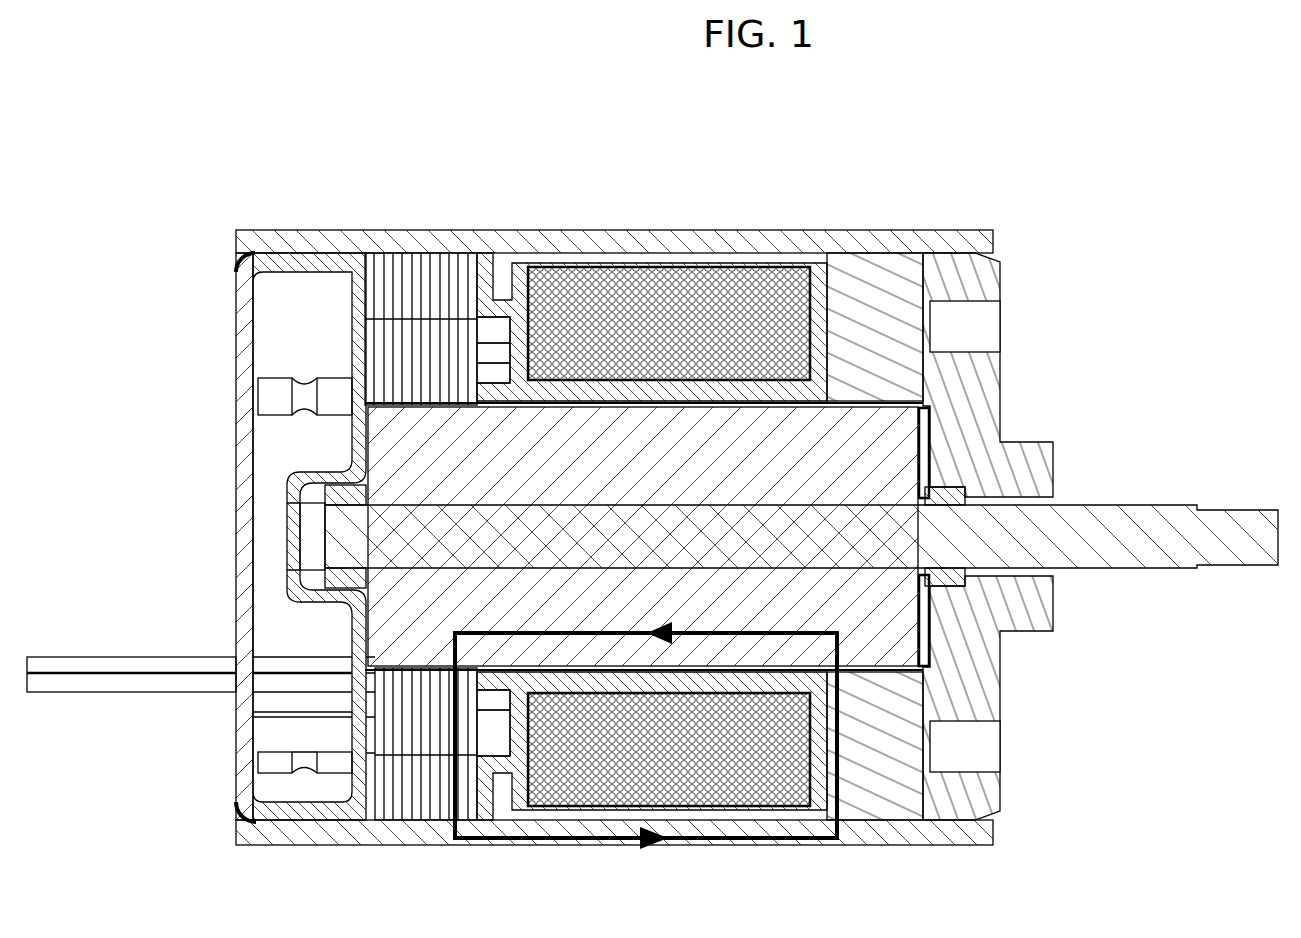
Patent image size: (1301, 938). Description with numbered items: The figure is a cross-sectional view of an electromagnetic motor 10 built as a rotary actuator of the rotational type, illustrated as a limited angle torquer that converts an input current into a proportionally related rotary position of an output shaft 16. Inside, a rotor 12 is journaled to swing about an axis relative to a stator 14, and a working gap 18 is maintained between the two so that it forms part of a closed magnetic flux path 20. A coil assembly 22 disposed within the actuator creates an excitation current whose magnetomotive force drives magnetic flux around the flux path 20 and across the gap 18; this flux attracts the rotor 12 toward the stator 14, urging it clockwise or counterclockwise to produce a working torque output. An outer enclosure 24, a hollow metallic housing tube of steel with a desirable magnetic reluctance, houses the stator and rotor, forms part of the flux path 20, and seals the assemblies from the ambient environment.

The electromagnetic motor 10 is at (940, 111).
The rotor 12 is at (900, 415).
The stator 14 is at (402, 265).
The output shaft 16 is at (1172, 569).
The working gap 18 is at (333, 704).
The magnetic flux path 20 is at (793, 840).
The coil assembly 22 is at (578, 806).
The outer enclosure 24 is at (938, 232).